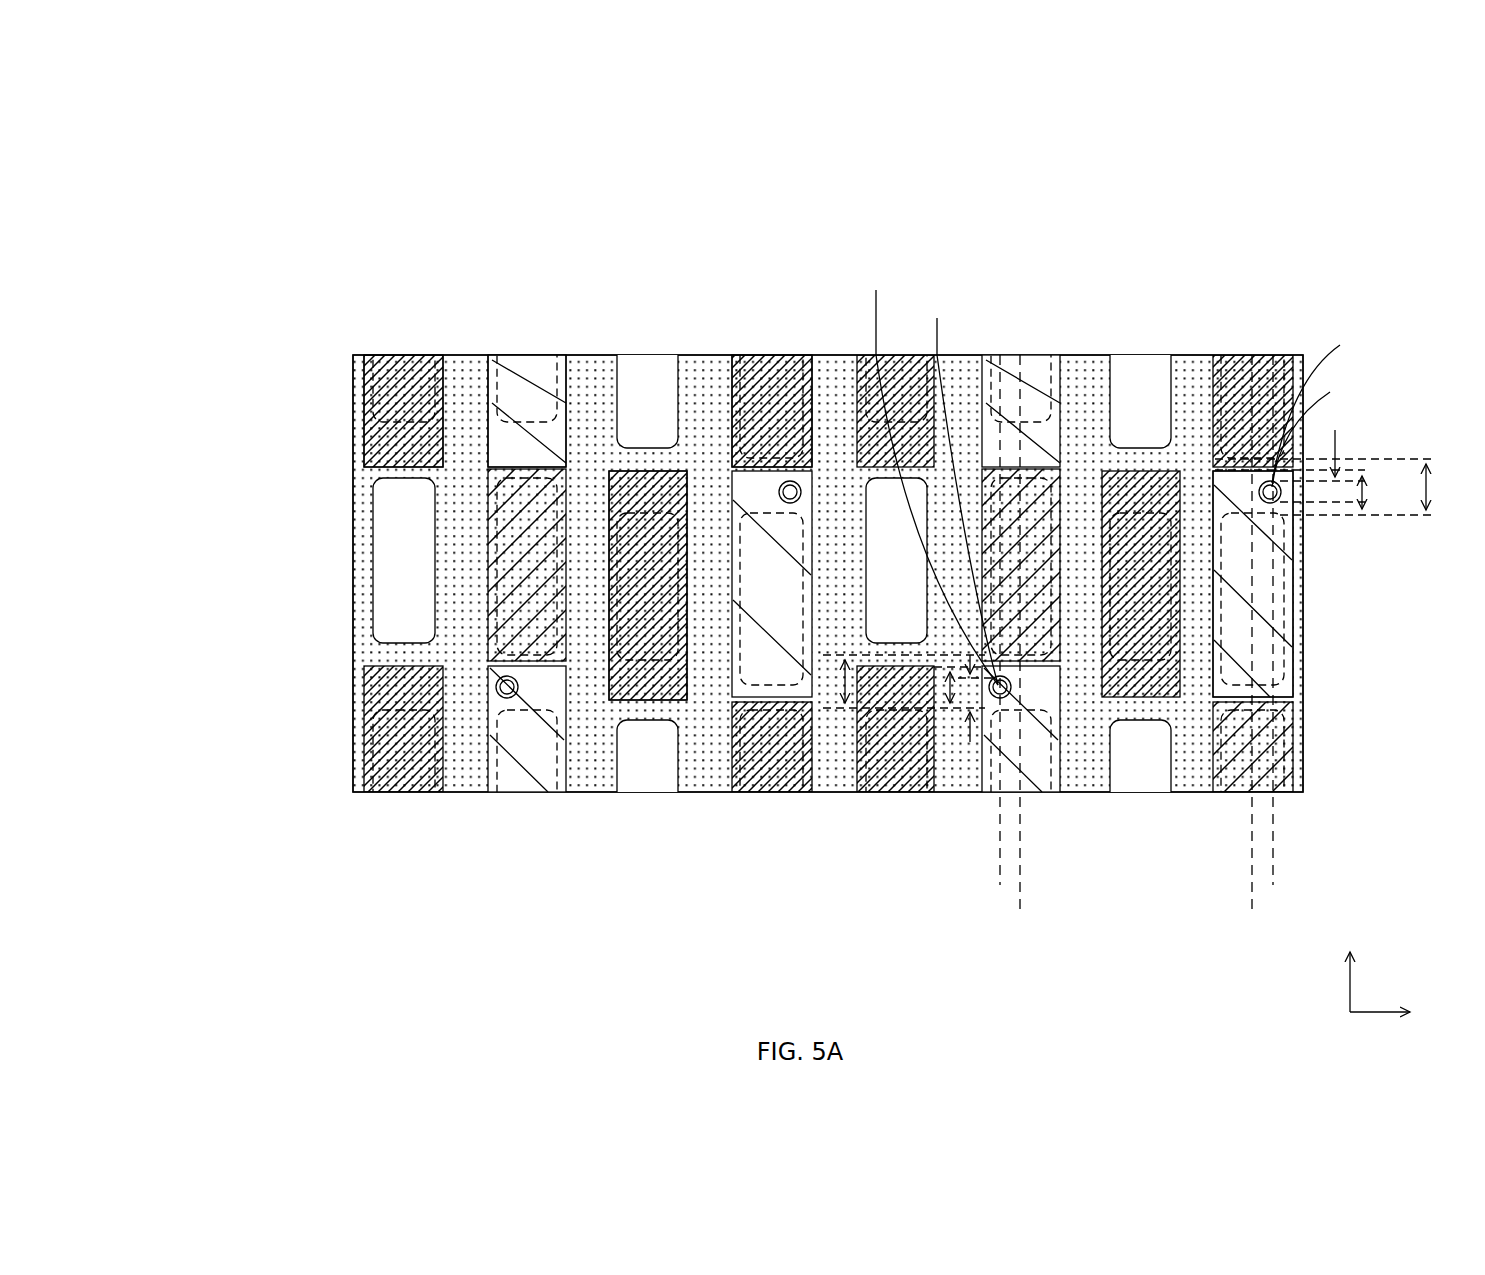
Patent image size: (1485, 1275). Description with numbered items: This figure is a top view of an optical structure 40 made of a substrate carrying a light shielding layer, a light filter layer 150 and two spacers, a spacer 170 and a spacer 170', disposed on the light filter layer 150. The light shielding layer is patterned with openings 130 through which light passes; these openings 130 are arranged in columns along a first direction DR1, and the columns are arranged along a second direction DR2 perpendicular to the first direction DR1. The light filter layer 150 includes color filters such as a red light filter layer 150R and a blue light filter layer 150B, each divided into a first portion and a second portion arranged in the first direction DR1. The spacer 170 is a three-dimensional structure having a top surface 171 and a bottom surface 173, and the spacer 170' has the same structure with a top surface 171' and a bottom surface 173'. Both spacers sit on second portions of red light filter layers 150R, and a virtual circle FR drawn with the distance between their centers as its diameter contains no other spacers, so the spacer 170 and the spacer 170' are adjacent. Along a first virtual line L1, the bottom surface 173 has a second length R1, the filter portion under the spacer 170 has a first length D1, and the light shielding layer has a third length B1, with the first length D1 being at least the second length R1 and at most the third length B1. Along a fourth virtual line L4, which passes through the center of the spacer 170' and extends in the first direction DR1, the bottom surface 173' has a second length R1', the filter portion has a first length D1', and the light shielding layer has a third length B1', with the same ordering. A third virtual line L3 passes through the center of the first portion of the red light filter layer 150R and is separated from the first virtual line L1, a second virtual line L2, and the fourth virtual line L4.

The optical structure 40 is at (293, 227).
The openings 130 is at (170, 262).
The light filter layer 150 is at (170, 382).
The red light filter layer 150R is at (250, 380).
The blue light filter layer 150B is at (250, 498).
The spacer 170 is at (598, 709).
The top surface 171 is at (582, 473).
The bottom surface 173 is at (582, 487).
The spacer 170' is at (731, 580).
The top surface 171' is at (775, 486).
The bottom surface 173' is at (767, 523).
The third length B1 is at (860, 792).
The first length D1 is at (907, 805).
The second length R1 is at (936, 793).
The third length B1' is at (1333, 487).
The first length D1' is at (1303, 489).
The second length R1' is at (1345, 450).
The first virtual line L1 is at (1000, 634).
The second virtual line L2 is at (1022, 646).
The third virtual line L3 is at (1252, 648).
The fourth virtual line L4 is at (1276, 634).
The virtual circle FR is at (1297, 637).
The first direction DR1 is at (1352, 966).
The second direction DR2 is at (1409, 1012).